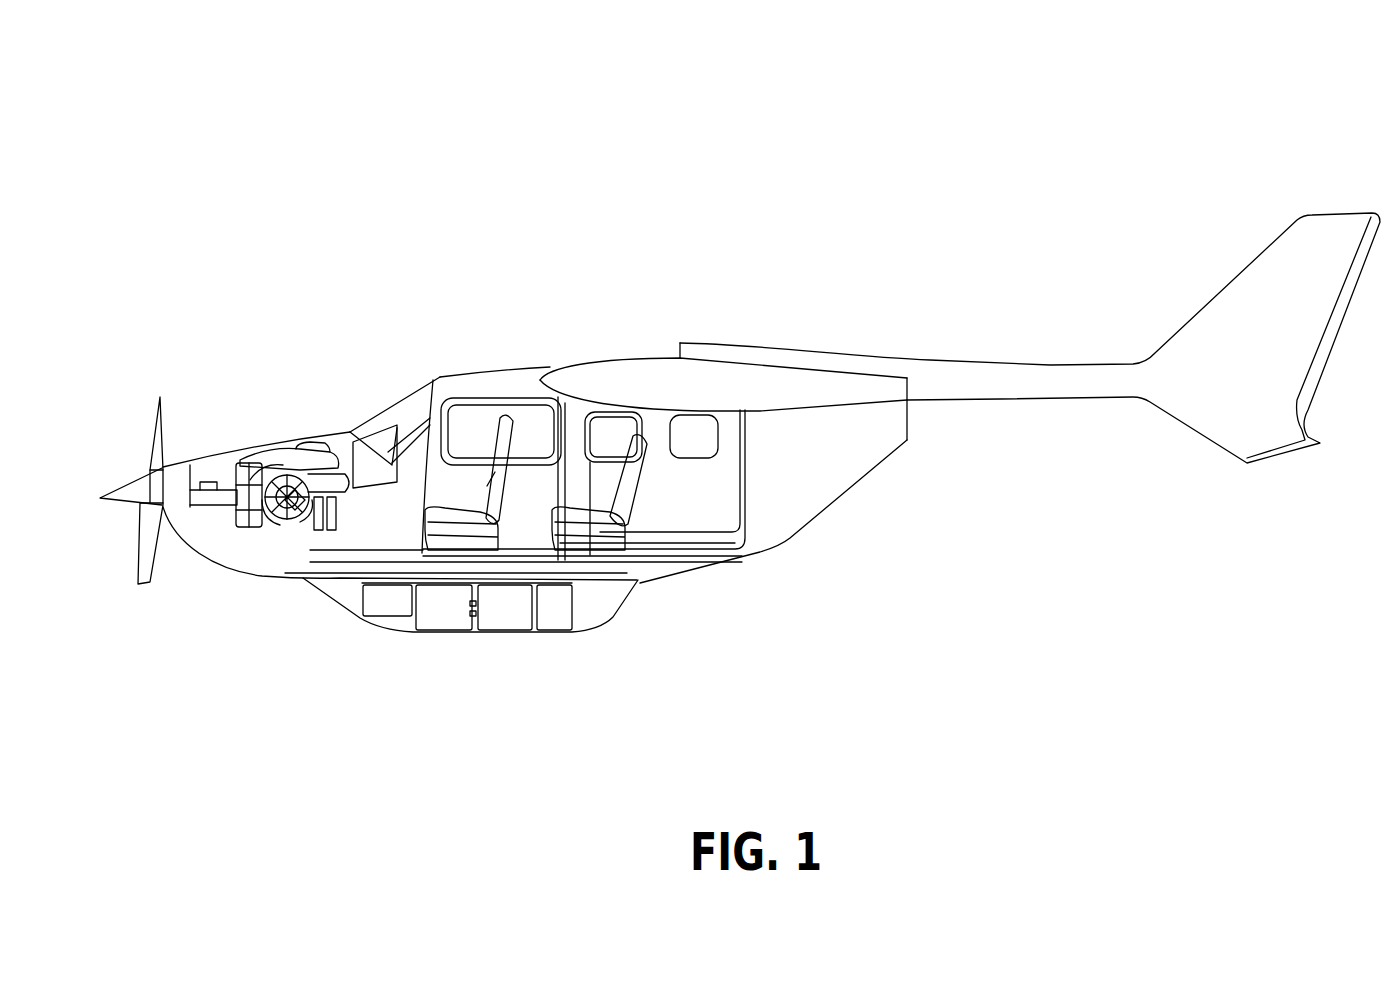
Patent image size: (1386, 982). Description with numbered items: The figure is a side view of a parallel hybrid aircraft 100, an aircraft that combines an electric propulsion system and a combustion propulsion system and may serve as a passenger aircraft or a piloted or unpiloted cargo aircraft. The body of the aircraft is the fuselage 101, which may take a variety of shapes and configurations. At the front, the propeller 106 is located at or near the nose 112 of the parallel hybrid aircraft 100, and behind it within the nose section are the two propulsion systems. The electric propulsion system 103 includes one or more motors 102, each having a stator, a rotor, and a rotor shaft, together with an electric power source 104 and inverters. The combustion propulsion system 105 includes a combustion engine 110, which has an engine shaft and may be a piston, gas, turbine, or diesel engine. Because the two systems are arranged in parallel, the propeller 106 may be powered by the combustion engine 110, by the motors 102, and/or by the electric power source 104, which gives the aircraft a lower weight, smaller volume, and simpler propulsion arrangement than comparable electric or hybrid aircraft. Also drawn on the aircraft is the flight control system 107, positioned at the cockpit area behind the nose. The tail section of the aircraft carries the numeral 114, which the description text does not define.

The parallel hybrid aircraft 100 is at (700, 131).
The fuselage 101 is at (504, 392).
The motor 102 is at (210, 500).
The electric propulsion system 103 is at (162, 512).
The electric power source 104 is at (570, 634).
The combustion propulsion system 105 is at (288, 516).
The propeller 106 is at (152, 452).
The flight control system 107 is at (390, 418).
The combustion engine 110 is at (288, 516).
The nose 112 is at (328, 398).
The tail section 114 is at (1384, 196).